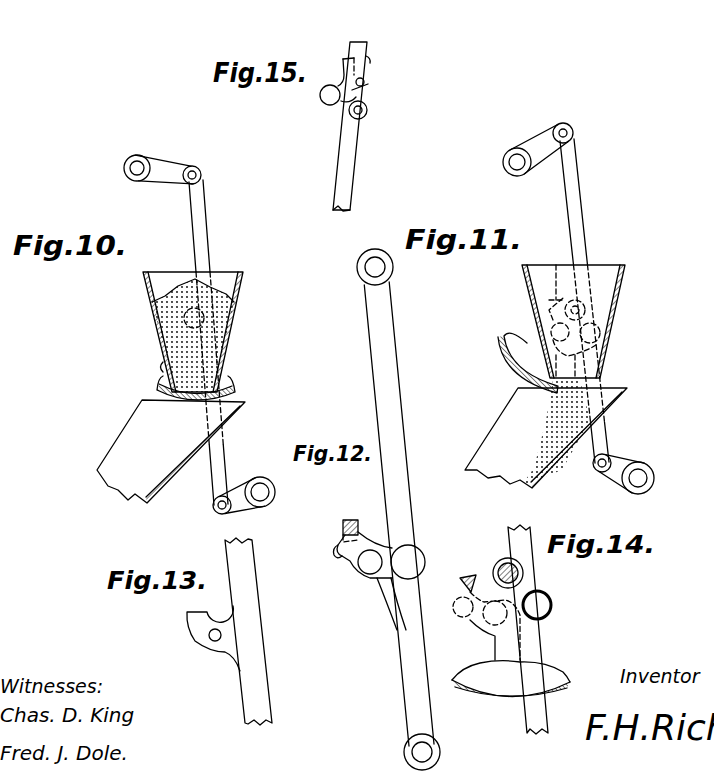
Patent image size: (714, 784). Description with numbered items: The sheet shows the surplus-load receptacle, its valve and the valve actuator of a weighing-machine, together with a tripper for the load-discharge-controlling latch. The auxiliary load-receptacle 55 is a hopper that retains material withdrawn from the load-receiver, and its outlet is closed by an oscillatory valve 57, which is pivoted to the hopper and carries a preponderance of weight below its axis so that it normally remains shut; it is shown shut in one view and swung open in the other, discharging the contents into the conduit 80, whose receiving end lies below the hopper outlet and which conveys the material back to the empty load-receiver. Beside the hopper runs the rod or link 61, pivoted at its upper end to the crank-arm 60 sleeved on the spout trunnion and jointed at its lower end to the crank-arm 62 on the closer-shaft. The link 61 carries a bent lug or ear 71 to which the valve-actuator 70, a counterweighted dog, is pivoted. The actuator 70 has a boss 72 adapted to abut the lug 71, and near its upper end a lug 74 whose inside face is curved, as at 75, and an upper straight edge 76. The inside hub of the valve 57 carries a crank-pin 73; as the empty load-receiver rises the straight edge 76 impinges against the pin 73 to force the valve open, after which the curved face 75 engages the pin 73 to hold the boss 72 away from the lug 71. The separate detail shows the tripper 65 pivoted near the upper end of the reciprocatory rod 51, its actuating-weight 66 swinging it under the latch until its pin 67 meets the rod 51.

In FIG. 15, the reciprocatory rod 51 is at (351, 148).
In FIG. 10, the auxiliary load-receptacle 55 is at (225, 352).
In FIG. 11, the auxiliary load-receptacle 55 is at (604, 362).
In FIG. 10, the oscillatory valve 57 is at (235, 386).
In FIG. 11, the oscillatory valve 57 is at (500, 346).
In FIG. 14, the oscillatory valve 57 is at (511, 679).
In FIG. 10, the crank-arm 60 is at (167, 167).
In FIG. 11, the crank-arm 60 is at (539, 142).
In FIG. 10, the rod or link 61 is at (197, 221).
In FIG. 11, the rod or link 61 is at (579, 209).
In FIG. 12, the rod or link 61 is at (402, 461).
In FIG. 13, the rod or link 61 is at (258, 666).
In FIG. 14, the rod or link 61 is at (528, 711).
In FIG. 10, the crank-arm 62 is at (239, 487).
In FIG. 11, the crank-arm 62 is at (631, 468).
In FIG. 15, the tripper 65 is at (342, 62).
In FIG. 15, the actuating-weight 66 is at (325, 103).
In FIG. 15, the pin 67 is at (370, 58).
In FIG. 11, the valve-actuator 70 is at (548, 342).
In FIG. 12, the valve-actuator 70 is at (358, 566).
In FIG. 14, the valve-actuator 70 is at (488, 622).
In FIG. 12, the bent lug or ear 71 is at (383, 585).
In FIG. 13, the bent lug or ear 71 is at (201, 628).
In FIG. 10, the boss 72 is at (160, 366).
In FIG. 12, the boss 72 is at (336, 553).
In FIG. 14, the boss 72 is at (460, 616).
In FIG. 10, the crank-pin 73 is at (167, 319).
In FIG. 11, the crank-pin 73 is at (556, 268).
In FIG. 14, the crank-pin 73 is at (503, 566).
In FIG. 10, the lug 74 is at (181, 357).
In FIG. 11, the lug 74 is at (552, 307).
In FIG. 12, the lug 74 is at (341, 528).
In FIG. 14, the lug 74 is at (462, 585).
In FIG. 12, the curved face 75 is at (347, 521).
In FIG. 14, the curved face 75 is at (463, 580).
In FIG. 12, the upper straight edge 76 is at (354, 520).
In FIG. 14, the upper straight edge 76 is at (468, 576).
In FIG. 10, the conduit 80 is at (125, 442).
In FIG. 11, the conduit 80 is at (505, 428).